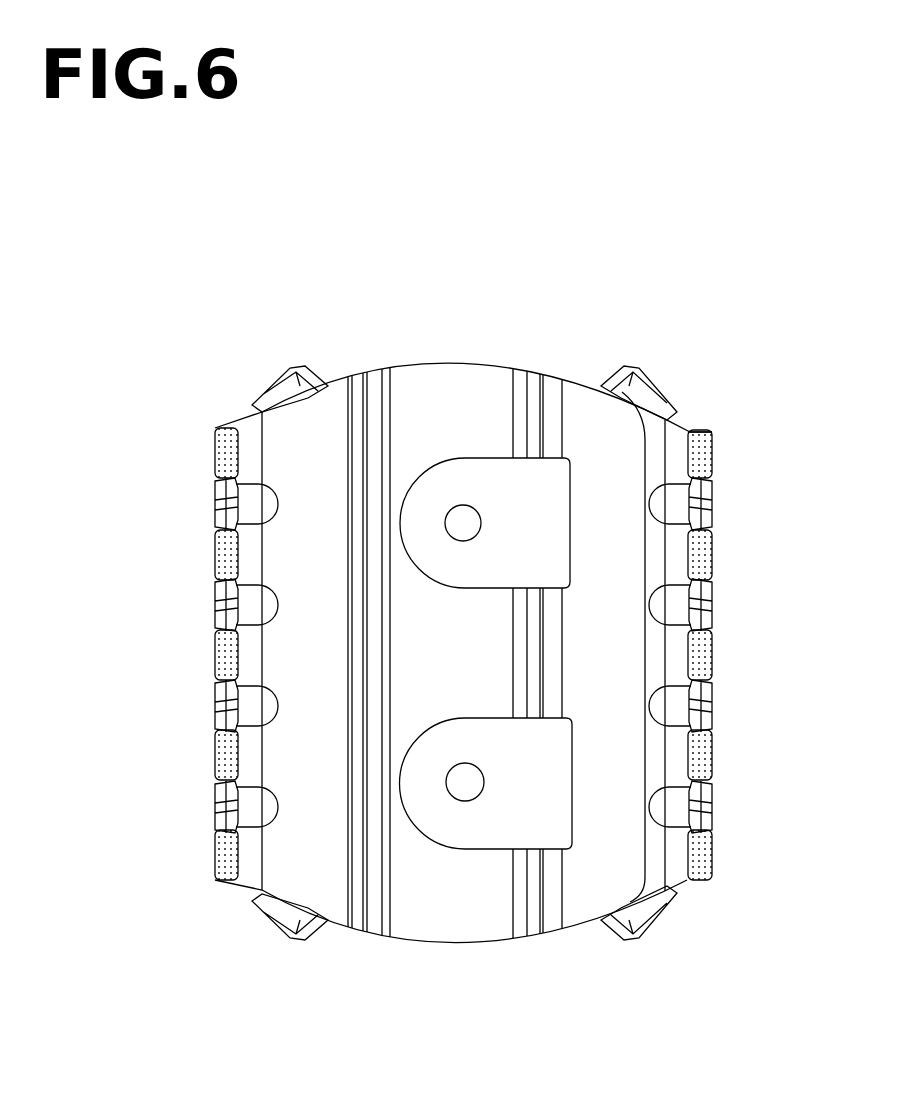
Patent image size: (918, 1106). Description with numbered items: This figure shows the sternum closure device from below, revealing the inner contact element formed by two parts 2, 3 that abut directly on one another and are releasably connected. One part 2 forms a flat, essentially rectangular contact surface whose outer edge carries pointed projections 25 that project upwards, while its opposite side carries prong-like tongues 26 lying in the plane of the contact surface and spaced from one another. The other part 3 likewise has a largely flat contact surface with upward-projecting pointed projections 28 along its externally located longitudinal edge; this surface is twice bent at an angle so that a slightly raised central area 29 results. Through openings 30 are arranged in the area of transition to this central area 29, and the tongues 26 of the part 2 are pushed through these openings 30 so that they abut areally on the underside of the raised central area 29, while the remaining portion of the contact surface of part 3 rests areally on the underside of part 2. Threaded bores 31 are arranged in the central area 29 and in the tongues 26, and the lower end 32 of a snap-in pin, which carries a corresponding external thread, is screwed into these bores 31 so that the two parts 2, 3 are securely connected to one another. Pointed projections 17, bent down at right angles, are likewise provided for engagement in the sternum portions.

The part of the inner contact element 2 is at (686, 410).
The part of the inner contact element 3 is at (418, 372).
The pointed projections 17 is at (268, 922).
The pointed projections 25 is at (702, 550).
The prong-like tongues 26 is at (482, 830).
The pointed projections 28 is at (218, 448).
The raised central area 29 is at (478, 390).
The through openings 30 is at (568, 798).
The threaded bores 31 is at (460, 515).
The lower end of snap-in pin 32 is at (478, 540).